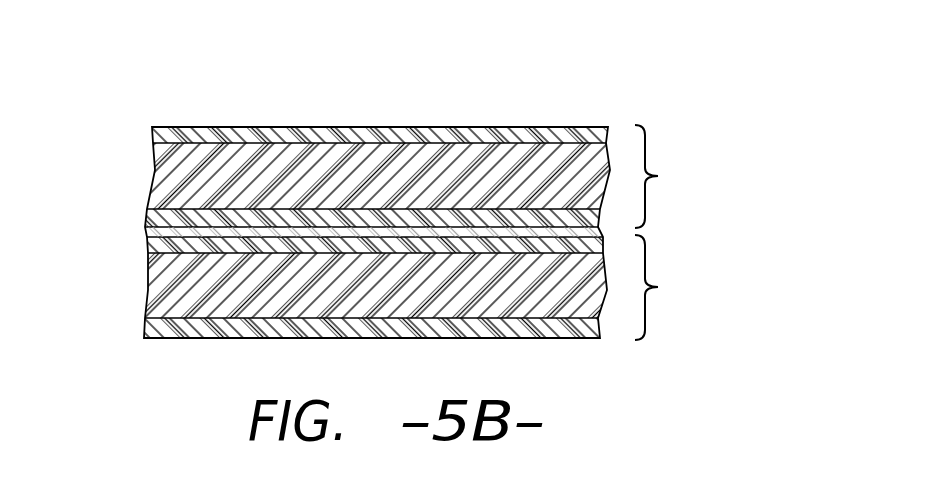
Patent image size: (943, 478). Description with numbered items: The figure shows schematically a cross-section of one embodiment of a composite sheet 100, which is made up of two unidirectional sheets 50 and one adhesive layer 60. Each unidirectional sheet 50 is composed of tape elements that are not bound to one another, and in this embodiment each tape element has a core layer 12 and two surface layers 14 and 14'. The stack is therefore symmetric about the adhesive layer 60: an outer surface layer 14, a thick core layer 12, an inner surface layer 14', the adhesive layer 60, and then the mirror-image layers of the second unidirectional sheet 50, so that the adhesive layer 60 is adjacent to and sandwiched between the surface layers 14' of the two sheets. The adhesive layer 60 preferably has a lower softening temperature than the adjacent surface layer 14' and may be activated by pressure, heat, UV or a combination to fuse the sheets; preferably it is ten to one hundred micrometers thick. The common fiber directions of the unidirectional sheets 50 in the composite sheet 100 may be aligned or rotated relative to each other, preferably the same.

The composite sheet 100 is at (589, 93).
The unidirectional sheet 50 is at (667, 232).
The core layer 12 is at (151, 187).
The surface layer 14 is at (377, 236).
The surface layer 14' is at (342, 233).
The adhesive layer 60 is at (146, 232).